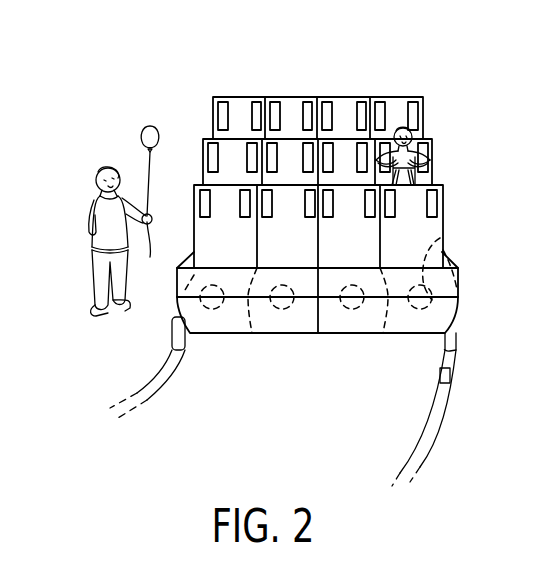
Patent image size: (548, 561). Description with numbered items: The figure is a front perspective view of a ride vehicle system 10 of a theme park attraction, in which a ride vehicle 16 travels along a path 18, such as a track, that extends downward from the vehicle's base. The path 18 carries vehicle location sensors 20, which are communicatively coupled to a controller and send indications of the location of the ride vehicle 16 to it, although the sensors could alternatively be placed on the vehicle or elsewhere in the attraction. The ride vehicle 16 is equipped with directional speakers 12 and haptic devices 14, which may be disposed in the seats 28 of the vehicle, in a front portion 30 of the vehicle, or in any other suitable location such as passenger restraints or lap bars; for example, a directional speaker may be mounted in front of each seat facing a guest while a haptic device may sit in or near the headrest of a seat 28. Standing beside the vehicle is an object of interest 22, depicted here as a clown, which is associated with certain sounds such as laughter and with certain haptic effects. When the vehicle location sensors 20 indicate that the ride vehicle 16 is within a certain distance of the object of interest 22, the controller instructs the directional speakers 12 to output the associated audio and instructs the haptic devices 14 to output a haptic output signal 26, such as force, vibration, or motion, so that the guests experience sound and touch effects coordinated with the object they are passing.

The ride vehicle system 10 is at (396, 62).
The directional speakers 12 is at (448, 236).
The haptic devices 14 is at (432, 202).
The ride vehicle 16 is at (443, 250).
The path 18 is at (160, 378).
The vehicle location sensors 20 is at (452, 378).
The object of interest 22 is at (103, 170).
The haptic output signal 26 is at (430, 160).
The seats 28 is at (238, 108).
The front portion 30 is at (217, 320).